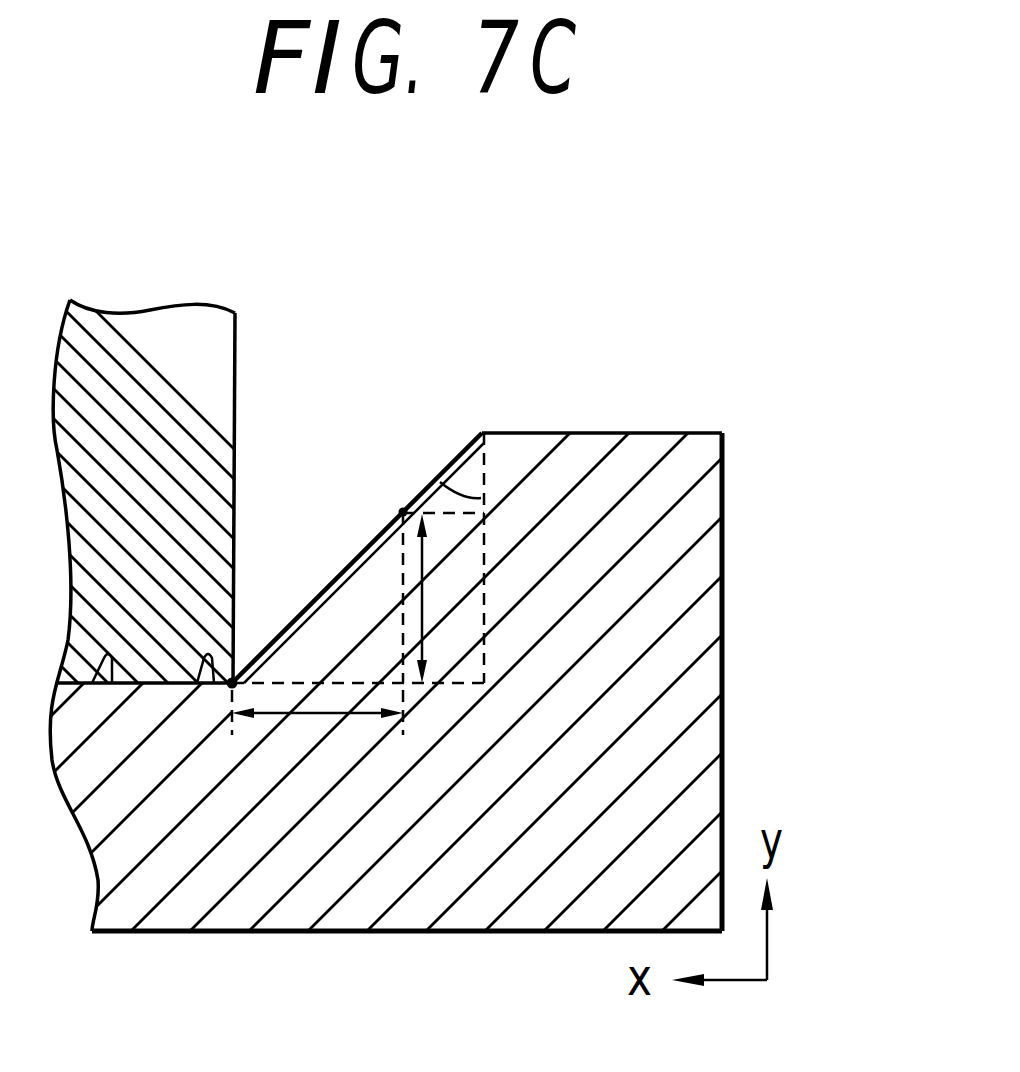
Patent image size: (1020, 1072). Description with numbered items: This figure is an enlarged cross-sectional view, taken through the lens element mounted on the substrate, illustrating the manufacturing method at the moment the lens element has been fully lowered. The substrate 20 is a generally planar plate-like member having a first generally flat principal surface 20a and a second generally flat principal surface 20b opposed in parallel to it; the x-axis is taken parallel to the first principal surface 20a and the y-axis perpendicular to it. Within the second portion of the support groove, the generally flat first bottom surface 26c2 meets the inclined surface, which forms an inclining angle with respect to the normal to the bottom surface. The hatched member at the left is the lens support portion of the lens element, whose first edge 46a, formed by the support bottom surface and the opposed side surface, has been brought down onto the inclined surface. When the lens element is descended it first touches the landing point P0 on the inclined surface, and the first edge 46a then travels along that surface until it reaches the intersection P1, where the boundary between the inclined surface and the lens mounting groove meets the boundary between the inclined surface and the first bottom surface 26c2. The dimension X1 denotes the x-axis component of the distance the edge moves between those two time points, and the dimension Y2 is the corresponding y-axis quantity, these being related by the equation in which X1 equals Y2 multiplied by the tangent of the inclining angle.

The substrate 20 is at (510, 678).
The first principal surface 20a is at (643, 432).
The second principal surface 20b is at (493, 933).
The first bottom surface 26c2 is at (112, 683).
The first edge 46a is at (251, 632).
The landing point P0 is at (403, 512).
The intersection P1 is at (211, 683).
The x-axis component of the distance X1 is at (310, 713).
The element Y2 is at (422, 593).